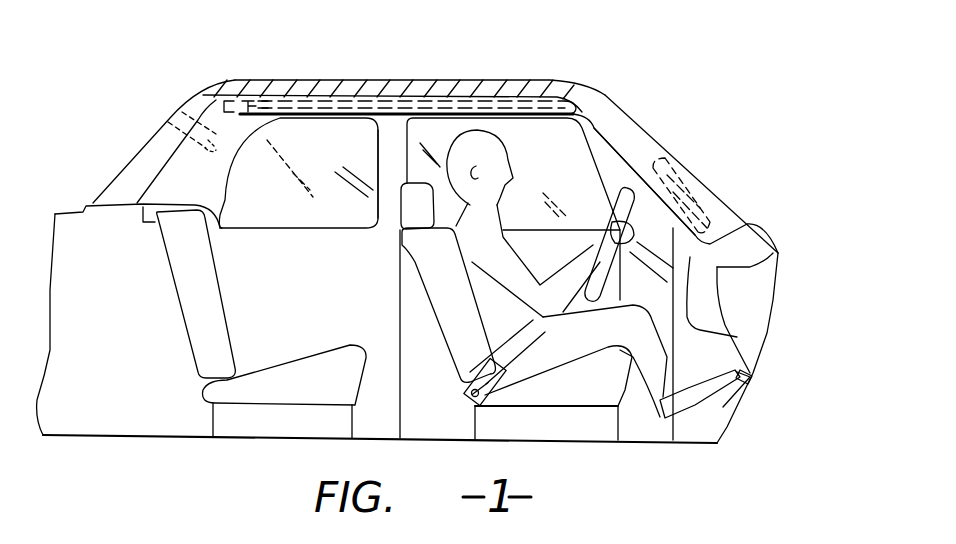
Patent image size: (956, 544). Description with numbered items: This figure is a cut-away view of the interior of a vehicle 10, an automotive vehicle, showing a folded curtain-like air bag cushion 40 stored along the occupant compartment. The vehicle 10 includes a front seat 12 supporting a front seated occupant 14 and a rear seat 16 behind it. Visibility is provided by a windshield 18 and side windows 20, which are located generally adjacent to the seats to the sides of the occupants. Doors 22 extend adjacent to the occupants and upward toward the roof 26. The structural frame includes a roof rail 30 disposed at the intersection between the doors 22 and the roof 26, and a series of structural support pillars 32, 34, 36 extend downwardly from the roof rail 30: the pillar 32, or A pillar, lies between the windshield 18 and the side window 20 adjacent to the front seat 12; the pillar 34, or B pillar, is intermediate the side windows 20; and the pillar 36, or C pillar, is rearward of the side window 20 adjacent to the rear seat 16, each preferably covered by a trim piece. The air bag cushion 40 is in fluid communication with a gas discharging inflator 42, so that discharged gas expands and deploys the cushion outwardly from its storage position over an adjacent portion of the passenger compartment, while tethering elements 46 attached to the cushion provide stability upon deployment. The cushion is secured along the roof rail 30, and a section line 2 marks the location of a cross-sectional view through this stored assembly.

The section line 2- 2 is at (553, 72).
The vehicle 10 is at (724, 72).
The front seat 12 is at (440, 335).
The front seated occupant 14 is at (455, 112).
The rear seat 16 is at (172, 288).
The windshield 18 is at (651, 133).
The side windows 20 is at (281, 209).
The doors 22 is at (355, 302).
The roof 26 is at (327, 80).
The roof rail 30 is at (314, 110).
The structural support pillar (A pillar) 32 is at (606, 185).
The structural support pillar (B pillar) 34 is at (372, 147).
The structural support pillar (C pillar) 36 is at (200, 114).
The air bag cushion 40 is at (257, 78).
The gas discharging inflator 42 is at (213, 85).
The tethering elements 46 is at (163, 122).